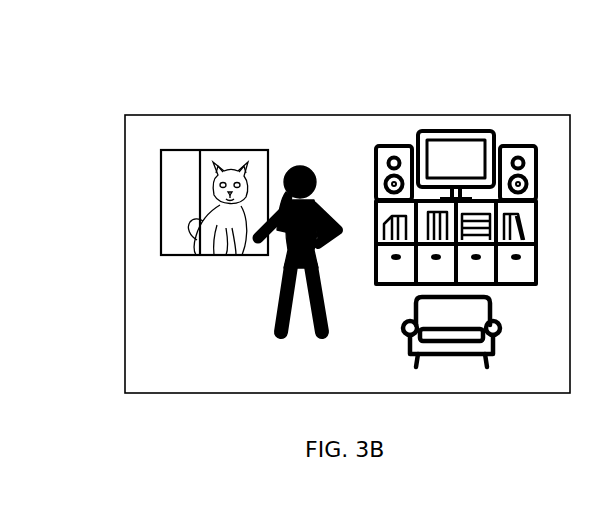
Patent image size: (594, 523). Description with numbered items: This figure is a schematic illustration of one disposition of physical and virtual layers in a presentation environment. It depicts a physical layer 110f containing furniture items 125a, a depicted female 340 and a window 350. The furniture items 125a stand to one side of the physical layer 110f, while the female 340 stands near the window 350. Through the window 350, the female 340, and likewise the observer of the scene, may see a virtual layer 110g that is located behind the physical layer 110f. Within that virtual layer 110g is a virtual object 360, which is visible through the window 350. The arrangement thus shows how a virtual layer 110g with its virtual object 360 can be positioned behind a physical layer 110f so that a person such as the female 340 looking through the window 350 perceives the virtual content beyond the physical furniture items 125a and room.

The physical layer 110f is at (352, 164).
The virtual layer 110g is at (197, 181).
The window 350 is at (214, 149).
The virtual object 360 is at (231, 170).
The female figure 340 is at (292, 166).
The furniture items 125a is at (497, 150).